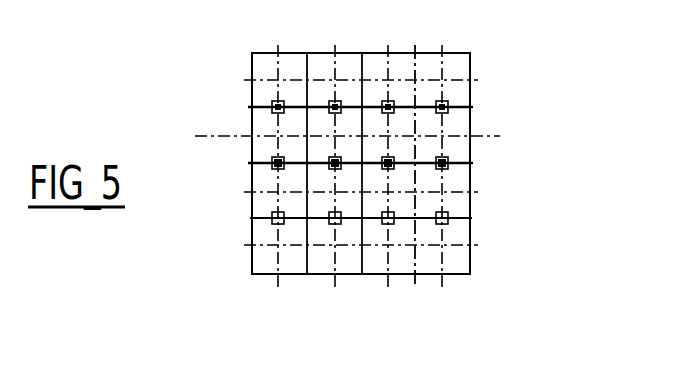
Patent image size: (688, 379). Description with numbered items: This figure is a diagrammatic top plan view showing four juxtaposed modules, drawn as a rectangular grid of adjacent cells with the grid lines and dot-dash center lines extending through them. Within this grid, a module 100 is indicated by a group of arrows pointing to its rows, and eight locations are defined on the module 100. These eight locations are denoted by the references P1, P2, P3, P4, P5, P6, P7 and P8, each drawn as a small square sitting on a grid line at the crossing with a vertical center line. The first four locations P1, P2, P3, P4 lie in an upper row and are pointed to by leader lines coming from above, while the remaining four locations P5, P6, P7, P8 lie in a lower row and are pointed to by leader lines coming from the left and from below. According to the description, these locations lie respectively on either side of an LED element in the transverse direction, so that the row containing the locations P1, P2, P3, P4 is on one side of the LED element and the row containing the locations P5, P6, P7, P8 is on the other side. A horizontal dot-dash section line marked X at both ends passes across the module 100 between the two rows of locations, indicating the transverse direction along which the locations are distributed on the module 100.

The module 100 is at (482, 259).
The location P1 is at (281, 102).
The location P2 is at (337, 101).
The location P3 is at (389, 101).
The location P4 is at (445, 101).
The location P5 is at (277, 170).
The location P6 is at (333, 170).
The location P7 is at (389, 171).
The location P8 is at (445, 172).